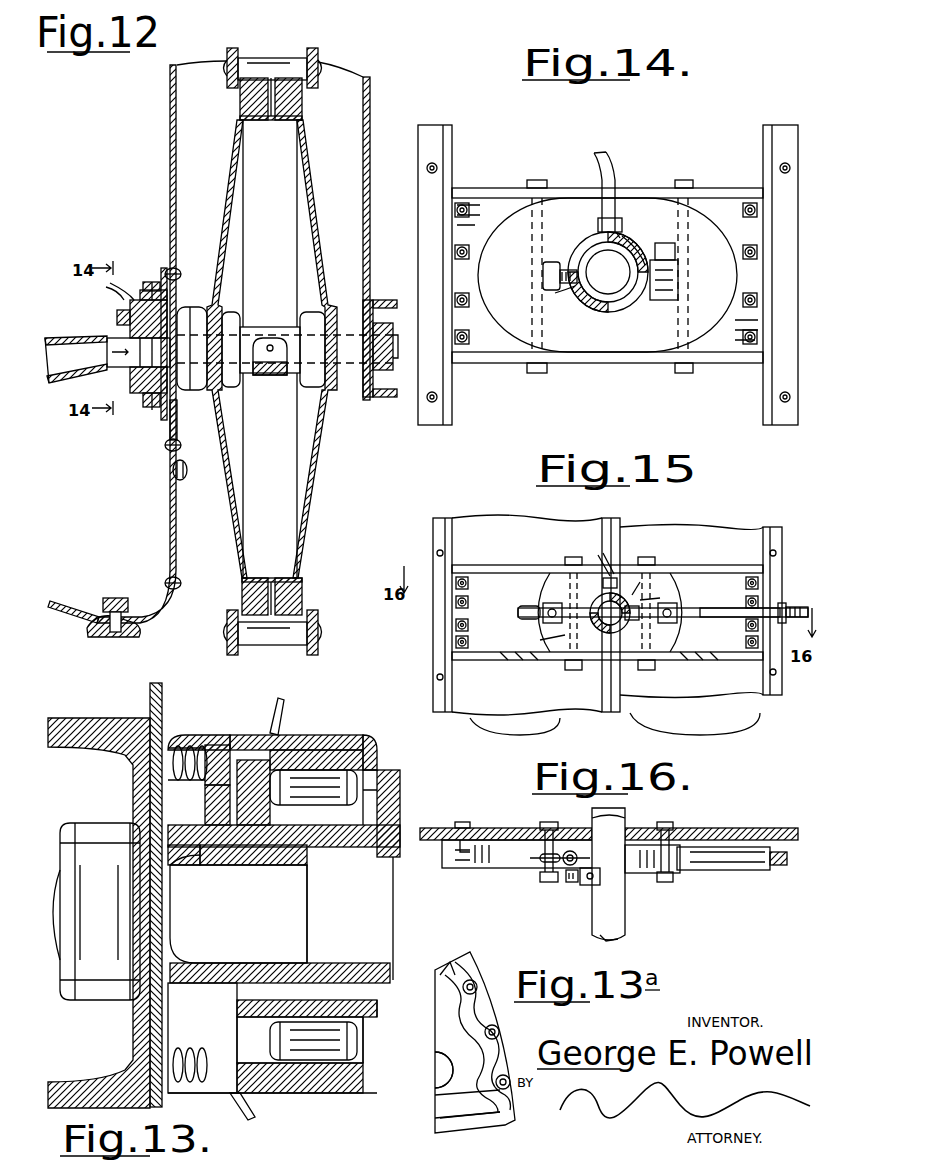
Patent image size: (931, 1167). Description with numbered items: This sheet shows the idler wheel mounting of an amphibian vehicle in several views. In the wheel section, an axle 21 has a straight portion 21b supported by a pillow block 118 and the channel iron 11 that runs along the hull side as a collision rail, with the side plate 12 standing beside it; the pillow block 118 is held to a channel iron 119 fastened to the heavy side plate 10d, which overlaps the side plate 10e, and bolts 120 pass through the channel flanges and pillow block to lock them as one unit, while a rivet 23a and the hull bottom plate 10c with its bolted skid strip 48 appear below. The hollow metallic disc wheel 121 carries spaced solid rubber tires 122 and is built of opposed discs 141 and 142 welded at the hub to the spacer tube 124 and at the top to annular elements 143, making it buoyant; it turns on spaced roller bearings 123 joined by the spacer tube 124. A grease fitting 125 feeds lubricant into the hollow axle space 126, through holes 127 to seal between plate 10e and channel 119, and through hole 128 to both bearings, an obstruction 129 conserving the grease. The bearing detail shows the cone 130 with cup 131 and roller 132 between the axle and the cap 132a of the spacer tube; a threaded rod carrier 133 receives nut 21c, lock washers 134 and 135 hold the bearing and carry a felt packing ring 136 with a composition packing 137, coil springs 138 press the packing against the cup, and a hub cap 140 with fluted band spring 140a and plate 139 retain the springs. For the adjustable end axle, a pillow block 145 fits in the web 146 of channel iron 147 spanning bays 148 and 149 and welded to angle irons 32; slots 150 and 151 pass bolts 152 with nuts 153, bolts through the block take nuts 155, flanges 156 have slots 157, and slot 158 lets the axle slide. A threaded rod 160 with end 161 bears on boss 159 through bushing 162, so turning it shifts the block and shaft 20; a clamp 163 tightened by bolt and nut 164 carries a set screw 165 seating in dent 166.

In FIG. 12, the bottom plate 10c is at (85, 605).
In FIG. 12, the side plate 10d is at (170, 541).
In FIG. 16, the side plate 10d is at (505, 828).
In FIG. 12, the side plate 10e is at (172, 418).
In FIG. 16, the side plate 10e is at (445, 828).
In FIG. 12, the channel iron 11 is at (392, 300).
In FIG. 13, the channel iron 11 is at (80, 718).
In FIG. 12, the section line 12 is at (370, 90).
In FIG. 13, the section line 12 is at (150, 689).
In FIG. 15, the shaft 20 is at (615, 660).
In FIG. 16, the shaft 20 is at (620, 914).
In FIG. 12, the axle 21 is at (58, 382).
In FIG. 12, the straight axle portion 21b is at (120, 382).
In FIG. 14, the straight axle portion 21b is at (608, 272).
In FIG. 13, the straight axle portion 21b is at (397, 862).
In FIG. 12, the nut 21c is at (382, 398).
In FIG. 13, the nut 21c is at (97, 1000).
In FIG. 12, the rivet 23a is at (182, 480).
In FIG. 14, the vertical angle iron 32 is at (445, 125).
In FIG. 15, the vertical angle iron 32 is at (605, 515).
In FIG. 12, the skid strip 48 is at (90, 636).
In FIG. 12, the pillow block 118 is at (130, 290).
In FIG. 14, the pillow block 118 is at (603, 343).
In FIG. 12, the channel iron 119 is at (143, 408).
In FIG. 14, the channel iron 119 is at (497, 172).
In FIG. 12, the bolt 120 is at (170, 272).
In FIG. 14, the bolt 120 is at (672, 368).
In FIG. 12, the disc wheel 121 is at (287, 230).
In FIG. 12, the solid rubber tire 122 is at (302, 593).
In FIG. 12, the roller bearing 123 is at (311, 312).
In FIG. 12, the spacer tube 124 is at (288, 327).
In FIG. 13, the spacer tube 124 is at (412, 755).
In FIG. 12, the grease fitting 125 is at (110, 298).
In FIG. 14, the grease fitting 125 is at (598, 226).
In FIG. 12, the hollow axle space 126 is at (117, 316).
In FIG. 12, the hole 127 is at (192, 330).
In FIG. 12, the hole 128 is at (268, 376).
In FIG. 12, the obstruction 129 is at (107, 345).
In FIG. 13, the cone 130 is at (325, 847).
In FIG. 13, the cup 131 is at (348, 748).
In FIG. 13, the roller 132 is at (375, 785).
In FIG. 13, the cap 132a is at (295, 735).
In FIG. 13, the threaded rod carrier 133 is at (268, 940).
In FIG. 13, the lock washer 134 is at (228, 850).
In FIG. 13, the lock washer 135 is at (193, 860).
In FIG. 13, the felt packing ring 136 is at (218, 745).
In FIG. 13, the composition packing element 137 is at (245, 733).
In FIG. 13, the coil spring 138 is at (170, 768).
In FIG. 13A, the coil spring 138 is at (478, 965).
In FIG. 13A, the spring plate 139 is at (435, 1100).
In FIG. 13, the hub cap 140 is at (232, 1100).
In FIG. 13A, the hub cap 140 is at (436, 1052).
In FIG. 13A, the fluted band spring 140a is at (436, 1122).
In FIG. 12, the metallic disc 141 is at (232, 164).
In FIG. 12, the metallic disc 142 is at (310, 157).
In FIG. 12, the annular element 143 is at (261, 121).
In FIG. 15, the pillow block 145 is at (662, 574).
In FIG. 15, the web 146 is at (522, 601).
In FIG. 15, the channel iron 147 is at (485, 557).
In FIG. 15, the bay 148 is at (515, 729).
In FIG. 15, the bay 149 is at (695, 729).
In FIG. 15, the slot 150 is at (518, 613).
In FIG. 15, the slot 151 is at (668, 590).
In FIG. 15, the bolt 152 is at (550, 603).
In FIG. 16, the bolt 152 is at (670, 822).
In FIG. 15, the nut 153 is at (565, 623).
In FIG. 16, the nut 153 is at (677, 876).
In FIG. 15, the nut 155 is at (568, 668).
In FIG. 16, the nut 155 is at (552, 822).
In FIG. 15, the flange 156 is at (455, 642).
In FIG. 16, the flange 156 is at (480, 868).
In FIG. 16, the slot 157 is at (540, 860).
In FIG. 15, the slot 158 is at (560, 637).
In FIG. 15, the boss 159 is at (677, 623).
In FIG. 15, the threaded rod 160 is at (740, 601).
In FIG. 15, the threaded end 161 is at (805, 600).
In FIG. 15, the bushing 162 is at (783, 603).
In FIG. 14, the clamp 163 is at (630, 248).
In FIG. 15, the clamp 163 is at (605, 633).
In FIG. 16, the clamp 163 is at (586, 885).
In FIG. 14, the bolt and nut 164 is at (678, 264).
In FIG. 15, the bolt and nut 164 is at (630, 600).
In FIG. 14, the set screw 165 is at (543, 270).
In FIG. 15, the set screw 165 is at (605, 578).
In FIG. 16, the set screw 165 is at (568, 882).
In FIG. 14, the dent 166 is at (557, 292).